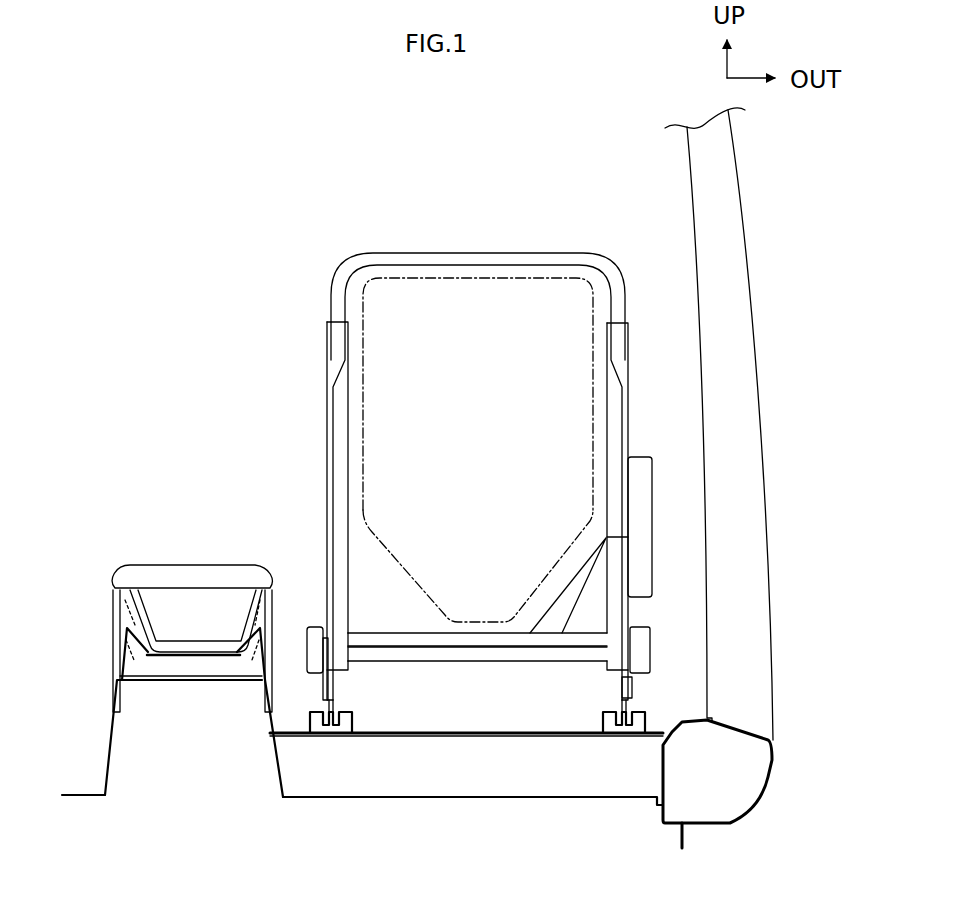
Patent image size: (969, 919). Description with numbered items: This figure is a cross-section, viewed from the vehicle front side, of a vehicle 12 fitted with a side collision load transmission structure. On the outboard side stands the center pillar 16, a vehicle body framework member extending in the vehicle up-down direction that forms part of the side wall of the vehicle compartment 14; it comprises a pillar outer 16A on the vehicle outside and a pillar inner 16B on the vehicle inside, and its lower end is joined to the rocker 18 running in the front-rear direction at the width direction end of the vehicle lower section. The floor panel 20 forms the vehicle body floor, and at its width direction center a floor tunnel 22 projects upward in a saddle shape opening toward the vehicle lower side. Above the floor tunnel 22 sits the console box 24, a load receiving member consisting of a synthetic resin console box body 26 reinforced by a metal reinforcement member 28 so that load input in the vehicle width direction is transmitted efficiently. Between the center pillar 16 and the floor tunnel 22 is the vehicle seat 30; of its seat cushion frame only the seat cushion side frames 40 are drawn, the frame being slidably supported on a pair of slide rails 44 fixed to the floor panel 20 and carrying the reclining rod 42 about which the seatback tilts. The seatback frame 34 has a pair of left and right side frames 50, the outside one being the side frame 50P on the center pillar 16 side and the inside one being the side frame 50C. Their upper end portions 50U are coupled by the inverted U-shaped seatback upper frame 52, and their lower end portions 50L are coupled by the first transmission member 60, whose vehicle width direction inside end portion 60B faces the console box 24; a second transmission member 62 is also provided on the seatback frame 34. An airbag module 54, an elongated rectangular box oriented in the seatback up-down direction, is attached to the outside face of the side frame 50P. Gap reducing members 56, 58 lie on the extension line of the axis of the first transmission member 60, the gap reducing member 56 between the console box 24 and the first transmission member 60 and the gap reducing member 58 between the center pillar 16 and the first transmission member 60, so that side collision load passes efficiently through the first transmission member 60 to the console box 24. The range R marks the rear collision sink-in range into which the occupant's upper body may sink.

The vehicle 12 is at (752, 160).
The vehicle compartment 14 is at (204, 140).
The center pillar 16 is at (690, 190).
The pillar outer 16A is at (753, 245).
The pillar inner 16B is at (700, 265).
The rocker 18 is at (768, 780).
The floor panel 20 is at (575, 800).
The floor tunnel 22 is at (195, 685).
The console box 24 is at (125, 553).
The console box body 26 is at (113, 620).
The reinforcement member 28 is at (162, 655).
The vehicle seat 30 is at (318, 238).
The seatback frame 34 is at (320, 330).
The seat cushion side frame 40 is at (323, 672).
The reclining rod 42 is at (470, 661).
The slide rail 44 is at (352, 720).
The seatback side frame 50 is at (455, 511).
The upper end portion 50U is at (335, 336).
The lower end portion 50L is at (345, 665).
The center side frame 50C is at (327, 418).
The side frame on vehicle width direction outside 50P is at (630, 393).
The seatback upper frame 52 is at (470, 253).
The airbag module 54 is at (652, 530).
The gap reducing member 56 is at (312, 628).
The gap reducing member 58 is at (652, 638).
The first transmission member 60 is at (462, 640).
The vehicle width direction inside end portion 60B is at (345, 640).
The second transmission member 62 is at (562, 597).
The rear collision sink-in range R is at (363, 390).